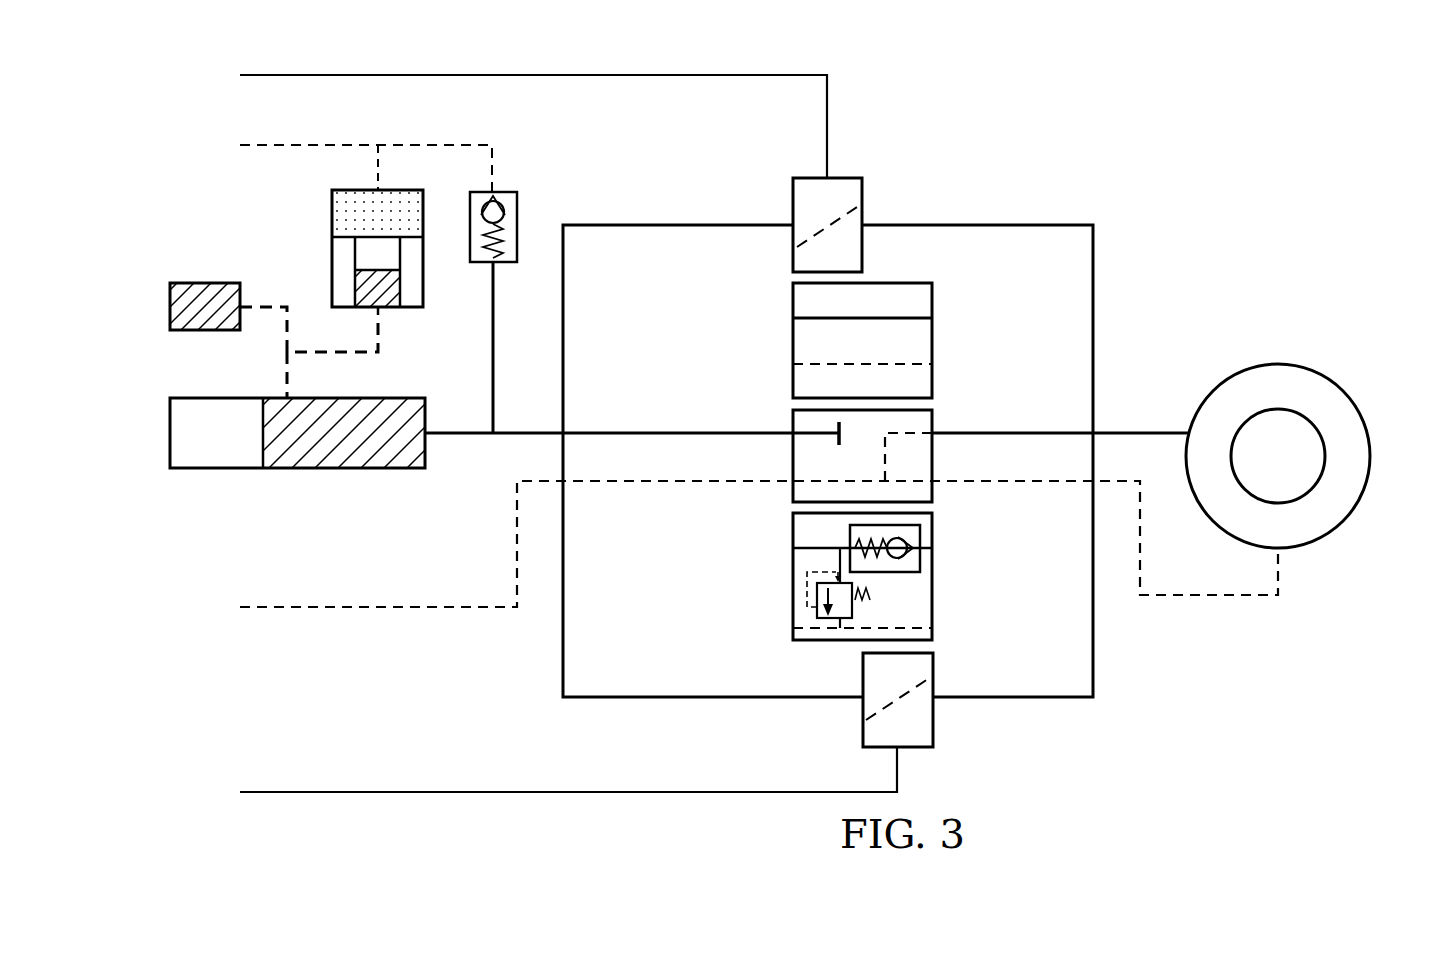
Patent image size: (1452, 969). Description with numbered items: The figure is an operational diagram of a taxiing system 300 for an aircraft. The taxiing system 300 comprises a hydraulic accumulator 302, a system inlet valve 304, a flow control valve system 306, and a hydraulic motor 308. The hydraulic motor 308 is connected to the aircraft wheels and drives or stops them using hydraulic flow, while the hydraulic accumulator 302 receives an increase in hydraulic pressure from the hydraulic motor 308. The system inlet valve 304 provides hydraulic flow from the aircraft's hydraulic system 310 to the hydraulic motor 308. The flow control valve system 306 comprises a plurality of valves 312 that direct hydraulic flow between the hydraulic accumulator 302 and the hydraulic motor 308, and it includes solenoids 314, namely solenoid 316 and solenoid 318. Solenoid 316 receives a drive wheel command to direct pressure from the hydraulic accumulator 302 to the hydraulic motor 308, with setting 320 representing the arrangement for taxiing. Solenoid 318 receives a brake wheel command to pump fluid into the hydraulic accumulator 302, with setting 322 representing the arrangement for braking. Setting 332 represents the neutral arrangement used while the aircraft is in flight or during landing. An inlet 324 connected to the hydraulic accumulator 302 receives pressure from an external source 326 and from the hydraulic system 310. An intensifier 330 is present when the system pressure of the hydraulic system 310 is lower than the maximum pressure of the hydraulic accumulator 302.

The taxiing system 300 is at (1255, 133).
The hydraulic accumulator 302 is at (215, 490).
The system inlet valve 304 is at (517, 212).
The flow control valve system 306 is at (677, 223).
The hydraulic motor 308 is at (1370, 455).
The hydraulic system 310 is at (307, 143).
The plurality of valves 312 is at (733, 538).
The solenoids 314 is at (782, 165).
The solenoid 316 is at (852, 178).
The solenoid 318 is at (922, 747).
The setting 320 is at (935, 340).
The setting 322 is at (935, 583).
The inlet 324 is at (283, 390).
The external source 326 is at (205, 280).
The intensifier 330 is at (330, 248).
The setting 332 is at (933, 455).